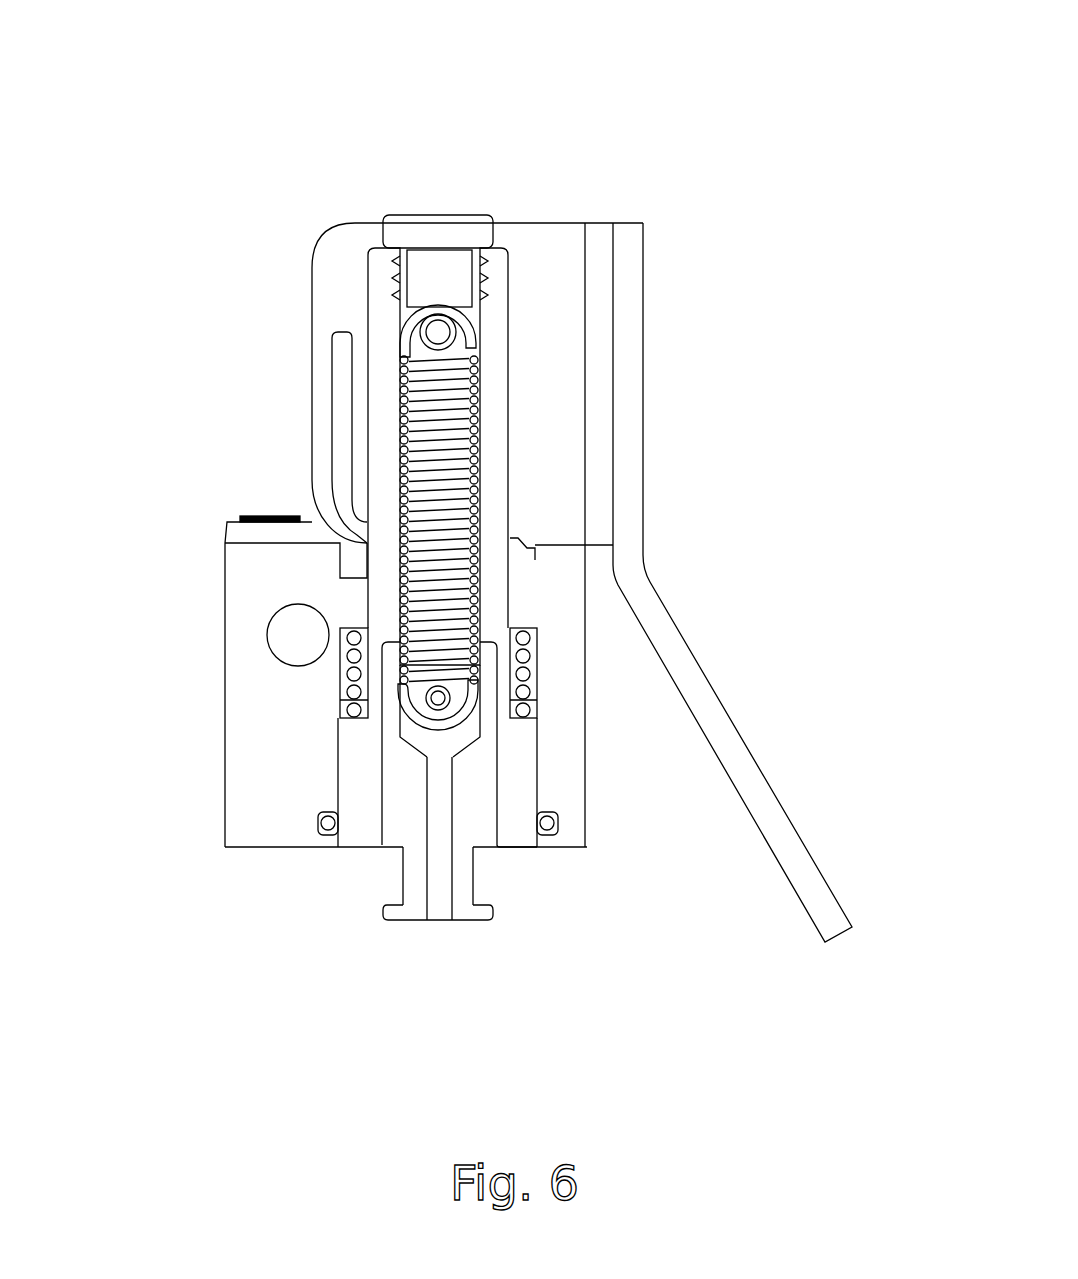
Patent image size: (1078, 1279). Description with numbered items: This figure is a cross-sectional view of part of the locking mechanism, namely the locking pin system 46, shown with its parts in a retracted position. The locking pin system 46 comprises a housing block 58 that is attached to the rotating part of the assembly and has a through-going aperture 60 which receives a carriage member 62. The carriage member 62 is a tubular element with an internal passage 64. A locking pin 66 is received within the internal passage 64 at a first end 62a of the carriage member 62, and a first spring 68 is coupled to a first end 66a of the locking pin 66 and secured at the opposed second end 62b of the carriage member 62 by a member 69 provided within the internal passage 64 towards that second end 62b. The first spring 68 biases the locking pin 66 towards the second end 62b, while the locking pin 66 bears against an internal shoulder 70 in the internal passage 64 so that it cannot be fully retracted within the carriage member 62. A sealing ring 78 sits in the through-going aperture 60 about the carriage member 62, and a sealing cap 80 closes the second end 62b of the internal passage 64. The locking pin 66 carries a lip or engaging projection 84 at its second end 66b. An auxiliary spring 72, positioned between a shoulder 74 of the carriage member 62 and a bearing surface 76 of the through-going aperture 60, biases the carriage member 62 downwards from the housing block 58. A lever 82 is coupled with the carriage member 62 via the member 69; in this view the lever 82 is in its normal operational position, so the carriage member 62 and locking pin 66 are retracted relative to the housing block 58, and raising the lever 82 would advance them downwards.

The locking pin system 46 is at (165, 158).
The housing block 58 is at (270, 770).
The through-going aperture 60 is at (540, 793).
The carriage member 62 is at (385, 590).
The first end of the carriage member 62a is at (540, 897).
The second end of the carriage member 62b is at (532, 190).
The internal passage 64 is at (405, 440).
The locking pin 66 is at (405, 840).
The first end of the locking pin 66a is at (277, 694).
The second end of the locking pin 66b is at (357, 958).
The first spring 68 is at (425, 412).
The member 69 is at (440, 336).
The internal shoulder 70 is at (492, 641).
The auxiliary spring 72 is at (527, 662).
The shoulder 74 is at (527, 722).
The bearing surface 76 is at (526, 628).
The sealing ring 78 is at (328, 824).
The sealing cap 80 is at (430, 237).
The lever 82 is at (742, 761).
The lip or engaging projection 84 is at (485, 918).